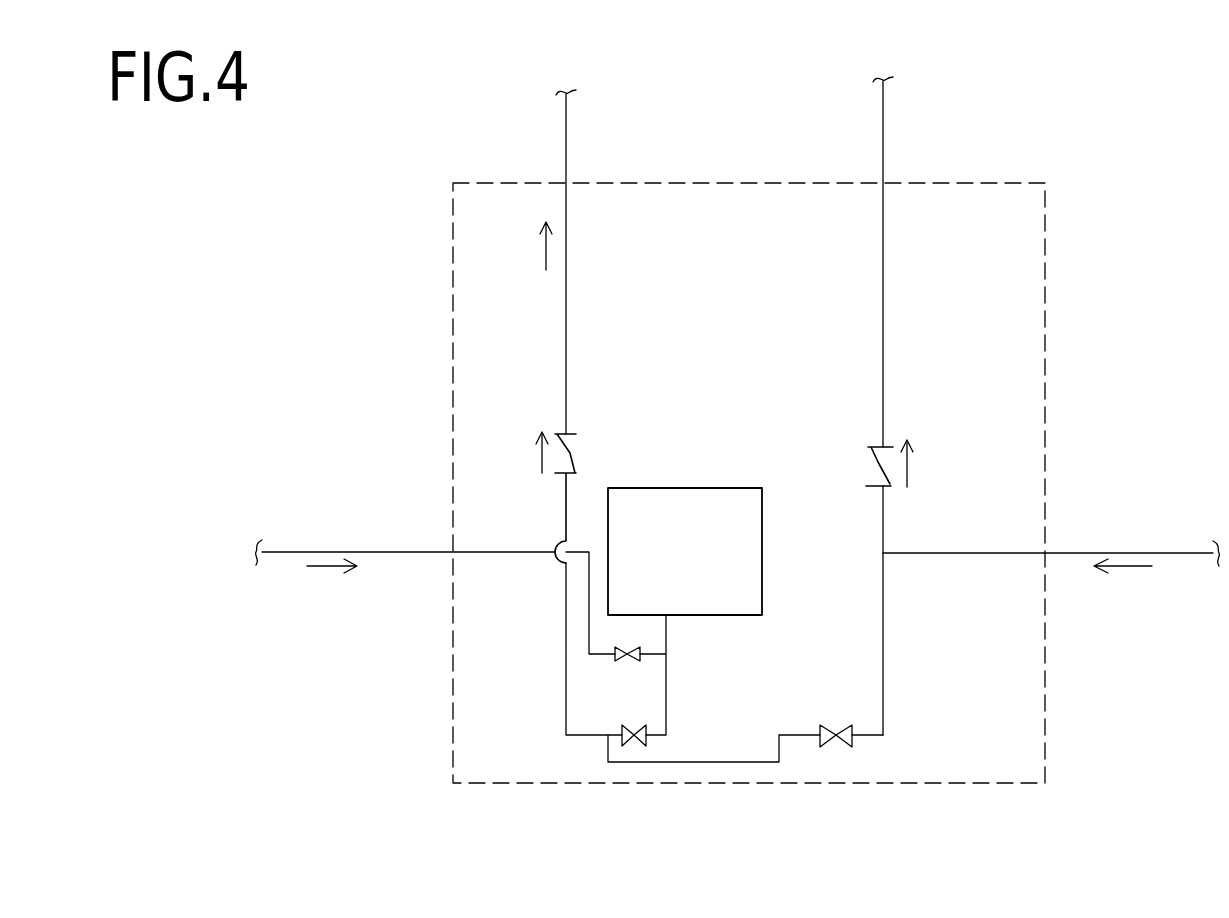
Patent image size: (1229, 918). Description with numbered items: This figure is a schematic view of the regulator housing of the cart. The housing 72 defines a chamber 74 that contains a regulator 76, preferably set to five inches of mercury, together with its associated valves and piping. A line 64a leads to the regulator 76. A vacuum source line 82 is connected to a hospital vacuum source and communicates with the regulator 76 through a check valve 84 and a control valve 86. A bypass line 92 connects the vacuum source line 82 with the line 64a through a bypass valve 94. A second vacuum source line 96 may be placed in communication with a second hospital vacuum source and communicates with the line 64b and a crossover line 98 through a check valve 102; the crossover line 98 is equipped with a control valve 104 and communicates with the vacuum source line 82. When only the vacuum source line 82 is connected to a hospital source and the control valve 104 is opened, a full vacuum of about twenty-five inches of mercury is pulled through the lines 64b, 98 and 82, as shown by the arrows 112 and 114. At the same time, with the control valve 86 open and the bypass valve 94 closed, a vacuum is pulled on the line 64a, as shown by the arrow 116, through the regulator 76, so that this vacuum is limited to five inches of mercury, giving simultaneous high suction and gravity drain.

The line 64a is at (334, 551).
The line 64b is at (1078, 553).
The housing 72 is at (1045, 258).
The chamber 74 is at (720, 301).
The regulator 76 is at (678, 564).
The vacuum source line 82 is at (566, 140).
The check valve 84 is at (568, 454).
The control valve 86 is at (633, 723).
The bypass line 92 is at (589, 599).
The bypass valve 94 is at (615, 658).
The second vacuum source line 96 is at (883, 125).
The crossover line 98 is at (883, 648).
The check valve 102 is at (872, 462).
The control valve 104 is at (832, 747).
The arrow 112 is at (1118, 568).
The arrow 114 is at (546, 246).
The arrow 116 is at (327, 568).